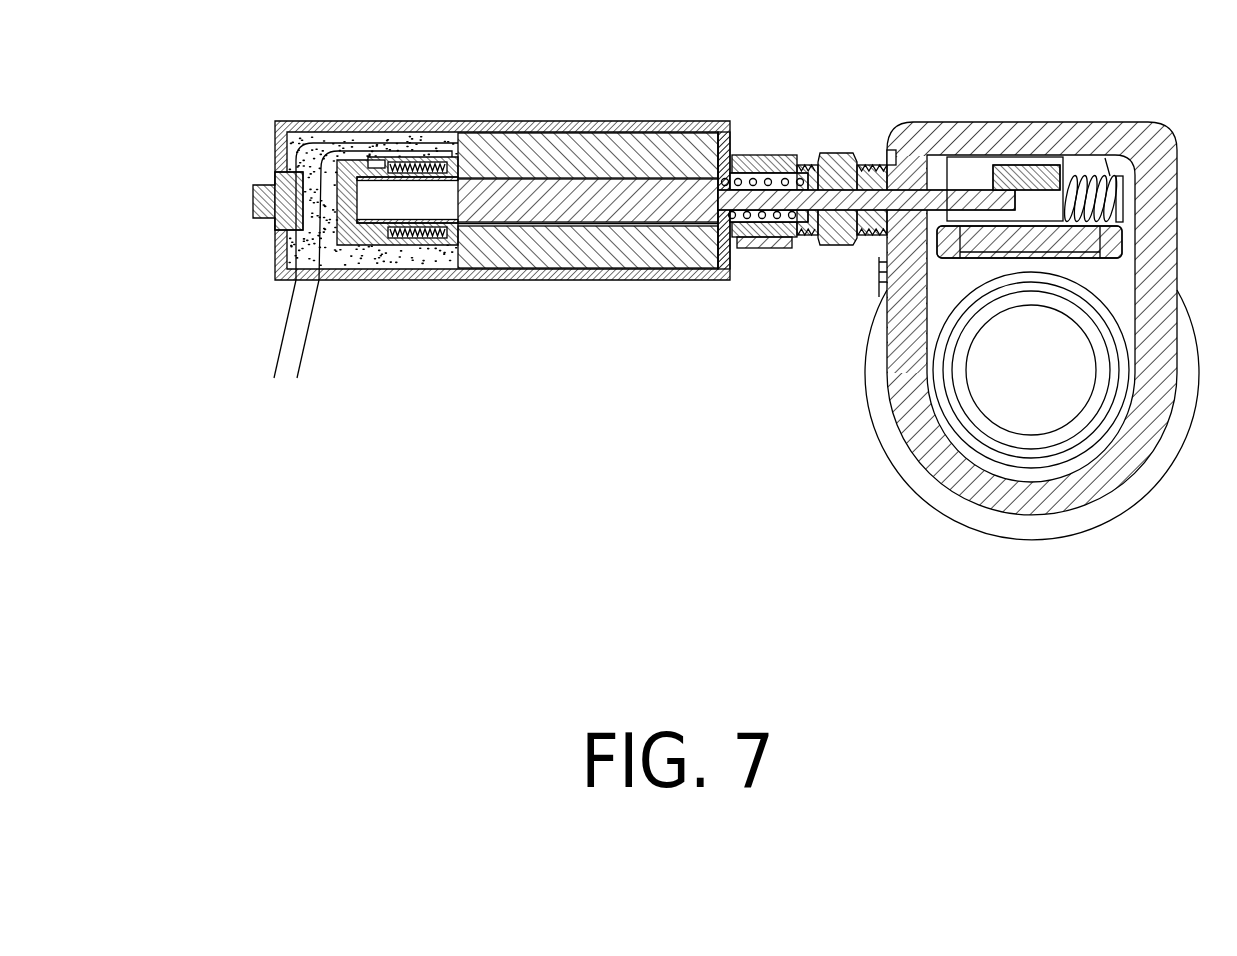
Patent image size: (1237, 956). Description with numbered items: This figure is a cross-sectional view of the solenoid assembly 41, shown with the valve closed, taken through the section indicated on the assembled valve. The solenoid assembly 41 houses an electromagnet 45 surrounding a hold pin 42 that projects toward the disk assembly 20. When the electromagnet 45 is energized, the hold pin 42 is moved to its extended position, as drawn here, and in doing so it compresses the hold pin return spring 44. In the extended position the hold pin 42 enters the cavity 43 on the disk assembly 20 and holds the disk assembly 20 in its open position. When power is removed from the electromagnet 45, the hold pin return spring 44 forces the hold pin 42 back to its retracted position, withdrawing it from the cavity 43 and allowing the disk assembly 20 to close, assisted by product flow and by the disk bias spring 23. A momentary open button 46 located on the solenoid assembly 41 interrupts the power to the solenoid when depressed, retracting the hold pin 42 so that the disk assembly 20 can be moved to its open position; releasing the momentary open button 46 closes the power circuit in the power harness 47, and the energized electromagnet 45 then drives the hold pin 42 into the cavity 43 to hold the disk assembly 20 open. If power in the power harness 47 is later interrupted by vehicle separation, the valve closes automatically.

The disk assembly 20 is at (967, 267).
The disk bias spring 23 is at (1105, 198).
The solenoid assembly 41 is at (410, 288).
The hold pin 42 is at (955, 198).
The cavity 43 is at (1048, 205).
The hold pin return spring 44 is at (784, 158).
The electromagnet 45 is at (616, 142).
The momentary open button 46 is at (263, 200).
The power harness 47 is at (271, 349).